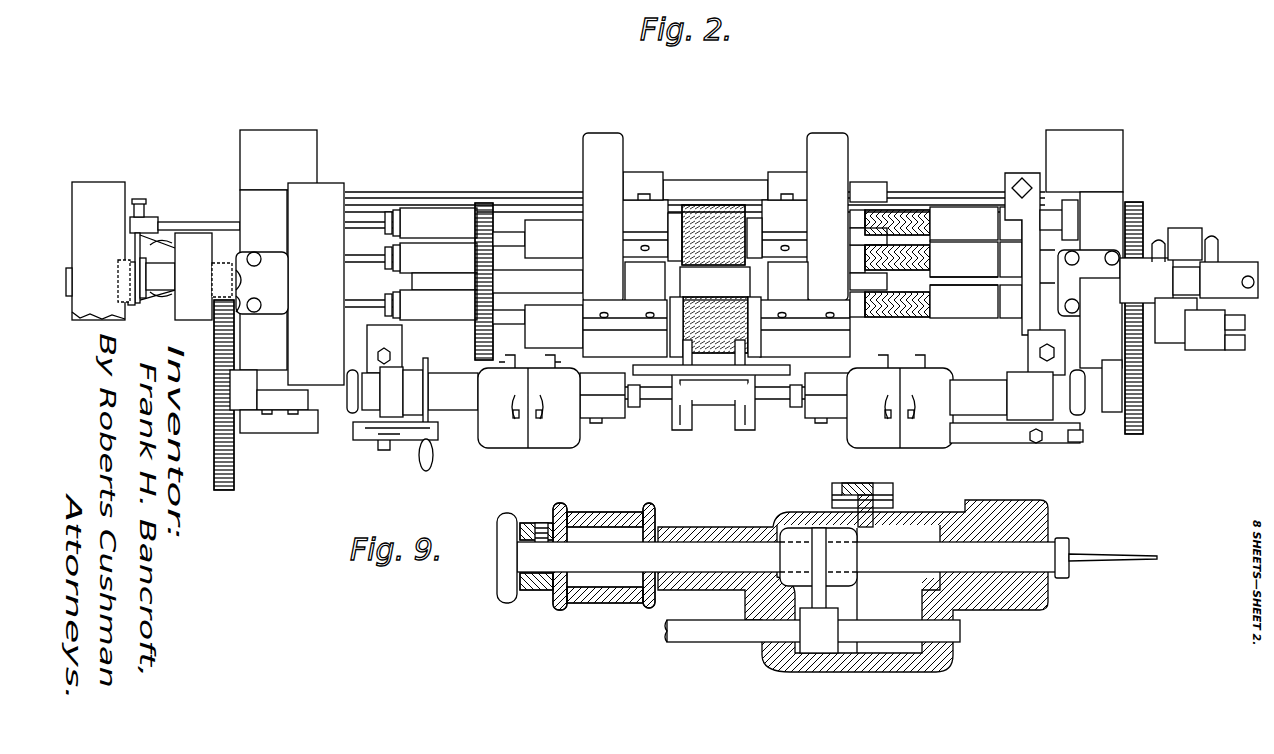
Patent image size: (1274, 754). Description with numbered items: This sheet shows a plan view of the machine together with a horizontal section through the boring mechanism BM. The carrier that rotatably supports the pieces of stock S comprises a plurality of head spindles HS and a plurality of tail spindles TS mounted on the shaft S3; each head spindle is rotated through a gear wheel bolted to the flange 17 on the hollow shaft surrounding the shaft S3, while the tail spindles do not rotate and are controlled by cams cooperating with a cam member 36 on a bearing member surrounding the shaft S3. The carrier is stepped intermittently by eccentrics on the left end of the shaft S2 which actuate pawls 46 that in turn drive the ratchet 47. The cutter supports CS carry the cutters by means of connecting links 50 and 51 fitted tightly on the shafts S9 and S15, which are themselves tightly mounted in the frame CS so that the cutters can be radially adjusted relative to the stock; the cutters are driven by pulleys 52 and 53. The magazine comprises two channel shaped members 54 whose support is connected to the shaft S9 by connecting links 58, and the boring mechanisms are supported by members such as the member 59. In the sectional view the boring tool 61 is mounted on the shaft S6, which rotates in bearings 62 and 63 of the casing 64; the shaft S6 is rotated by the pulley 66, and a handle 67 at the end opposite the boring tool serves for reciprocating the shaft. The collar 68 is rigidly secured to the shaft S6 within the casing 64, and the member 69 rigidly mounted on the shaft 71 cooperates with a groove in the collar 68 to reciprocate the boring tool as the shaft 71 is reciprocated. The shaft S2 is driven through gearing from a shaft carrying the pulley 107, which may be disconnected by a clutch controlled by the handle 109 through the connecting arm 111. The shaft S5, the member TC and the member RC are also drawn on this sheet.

In FIG. 2, the pulley 107 is at (95, 251).
In FIG. 2, the connecting arm 111 is at (190, 222).
In FIG. 2, the flange 17 is at (316, 284).
In FIG. 2, the shaft S5 is at (206, 288).
In FIG. 2, the shaft S2 is at (337, 393).
In FIG. 2, the handle 109 is at (421, 470).
In FIG. 2, the head spindles HS is at (432, 215).
In FIG. 2, the pulley 53 is at (554, 239).
In FIG. 2, the pulley 52 is at (554, 326).
In FIG. 2, the connecting link 50 is at (638, 180).
In FIG. 2, the tool carrier TC is at (726, 212).
In FIG. 2, the shaft S15 is at (740, 188).
In FIG. 2, the cutter support CS is at (615, 150).
In FIG. 2, the member 59 is at (645, 282).
In FIG. 2, the connecting links 58 is at (788, 282).
In FIG. 2, the connecting link 51 is at (625, 302).
In FIG. 2, the shaft S9 is at (715, 283).
In FIG. 2, the roll carrier RC is at (728, 357).
In FIG. 2, the stock S is at (714, 392).
In FIG. 2, the channel shaped members 54 is at (679, 402).
In FIG. 2, the boring mechanism BM is at (505, 440).
In FIG. 9, the boring mechanism BM is at (777, 515).
In FIG. 2, the tail spindles TS is at (960, 213).
In FIG. 2, the cam member 36 is at (1040, 318).
In FIG. 2, the ratchet 47 is at (1183, 234).
In FIG. 2, the shaft S3 is at (1246, 272).
In FIG. 2, the pawls 46 is at (1195, 352).
In FIG. 9, the bearing 62 is at (706, 585).
In FIG. 9, the casing 64 is at (930, 668).
In FIG. 9, the bearing 63 is at (1050, 585).
In FIG. 9, the collar 68 is at (842, 567).
In FIG. 9, the member 69 is at (818, 642).
In FIG. 9, the shaft 71 is at (724, 633).
In FIG. 9, the pulley 66 is at (605, 603).
In FIG. 9, the shaft S6 is at (789, 557).
In FIG. 9, the handle 67 is at (503, 600).
In FIG. 9, the boring tool 61 is at (1120, 553).